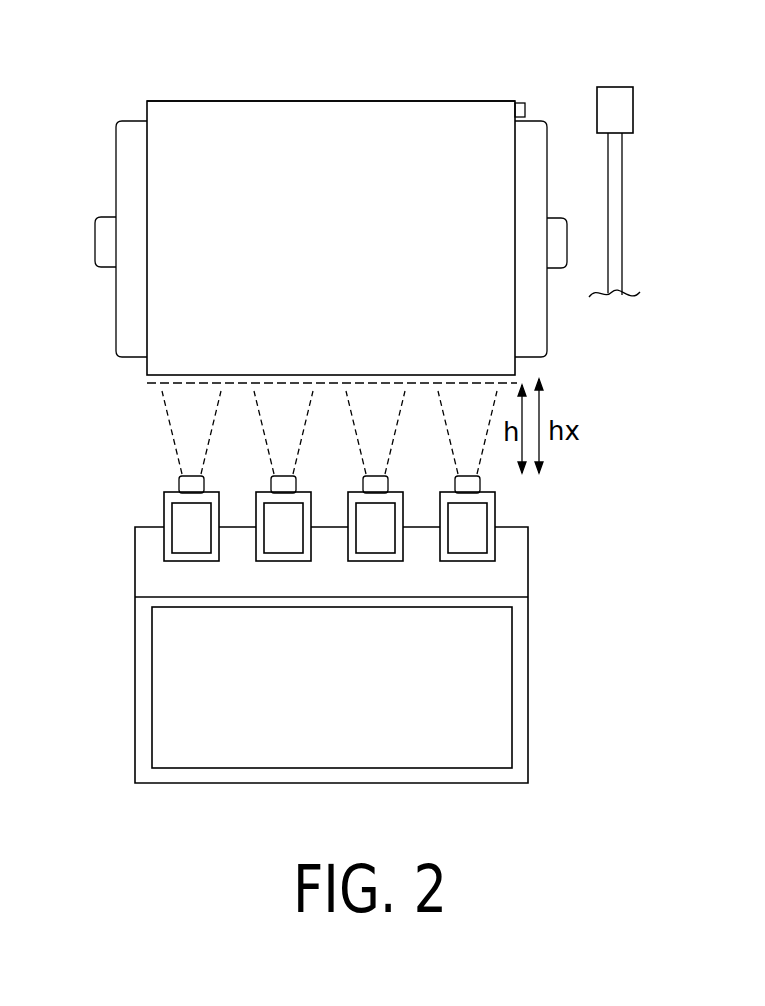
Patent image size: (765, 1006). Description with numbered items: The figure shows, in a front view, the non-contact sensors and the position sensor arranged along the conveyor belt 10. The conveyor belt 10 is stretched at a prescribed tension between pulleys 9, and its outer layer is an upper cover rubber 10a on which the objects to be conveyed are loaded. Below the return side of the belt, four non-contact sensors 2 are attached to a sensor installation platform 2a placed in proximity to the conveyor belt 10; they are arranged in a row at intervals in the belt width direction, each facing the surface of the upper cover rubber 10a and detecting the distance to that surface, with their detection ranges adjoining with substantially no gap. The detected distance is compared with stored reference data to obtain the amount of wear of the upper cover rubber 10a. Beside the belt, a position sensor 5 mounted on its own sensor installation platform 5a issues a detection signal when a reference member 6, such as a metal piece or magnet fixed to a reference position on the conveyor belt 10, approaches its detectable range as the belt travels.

The conveyor belt 10 is at (240, 101).
The upper cover rubber 10a is at (342, 133).
The pulley 9 is at (132, 177).
The reference member 6 is at (521, 101).
The position sensor 5 is at (615, 110).
The sensor installation platform 5a is at (617, 207).
The non-contact sensor 2 is at (192, 537).
The sensor installation platform 2a is at (493, 691).